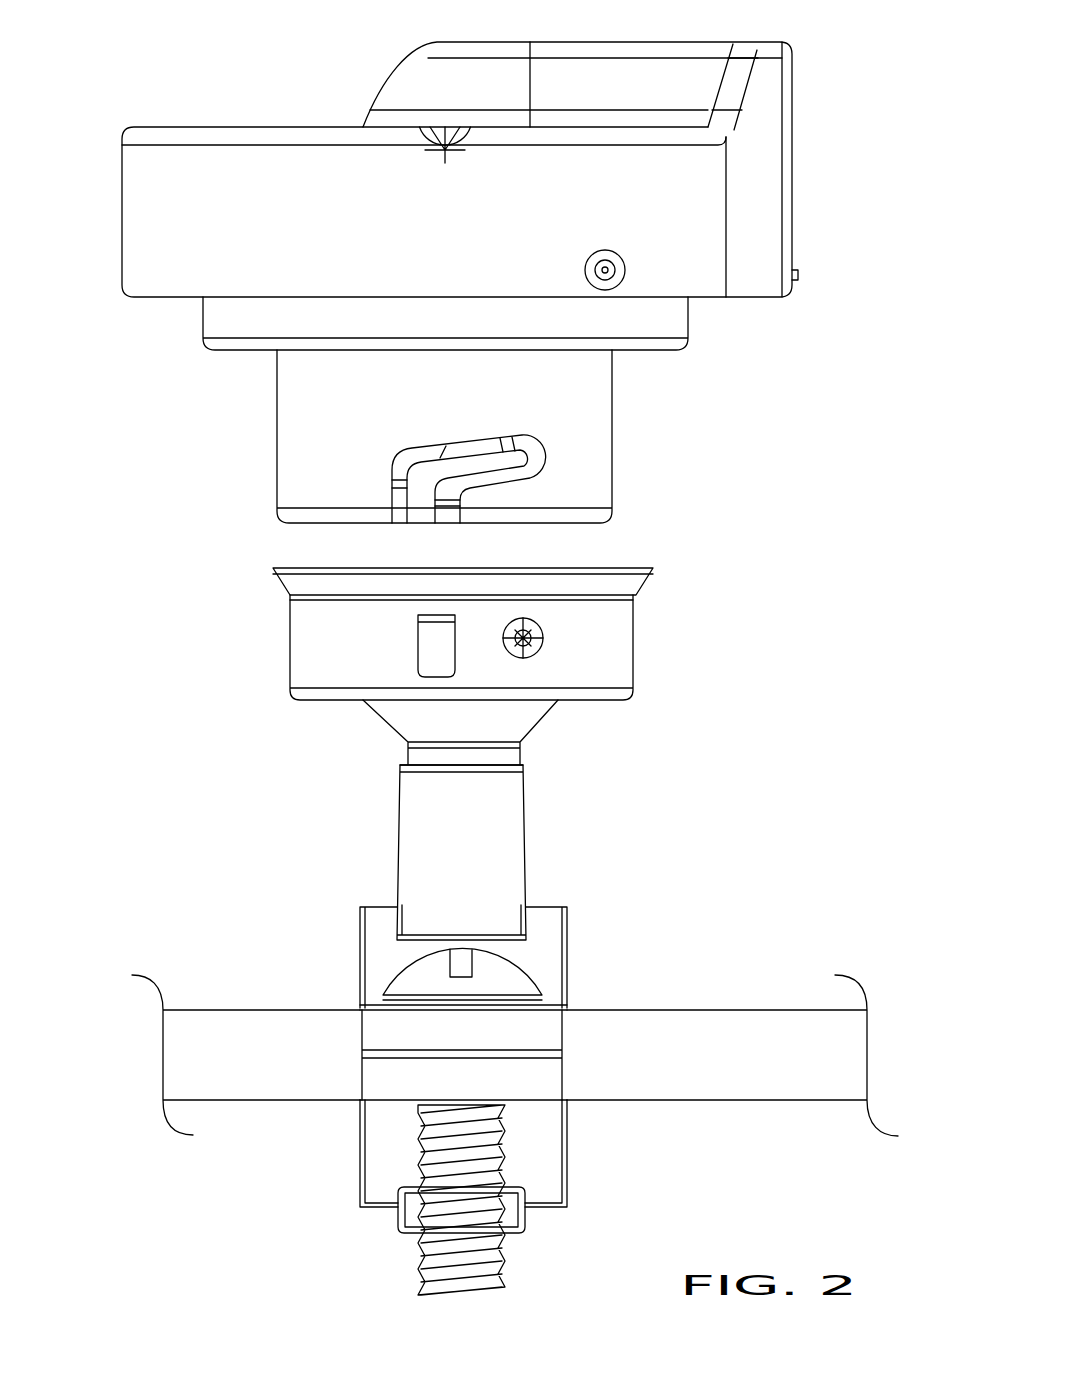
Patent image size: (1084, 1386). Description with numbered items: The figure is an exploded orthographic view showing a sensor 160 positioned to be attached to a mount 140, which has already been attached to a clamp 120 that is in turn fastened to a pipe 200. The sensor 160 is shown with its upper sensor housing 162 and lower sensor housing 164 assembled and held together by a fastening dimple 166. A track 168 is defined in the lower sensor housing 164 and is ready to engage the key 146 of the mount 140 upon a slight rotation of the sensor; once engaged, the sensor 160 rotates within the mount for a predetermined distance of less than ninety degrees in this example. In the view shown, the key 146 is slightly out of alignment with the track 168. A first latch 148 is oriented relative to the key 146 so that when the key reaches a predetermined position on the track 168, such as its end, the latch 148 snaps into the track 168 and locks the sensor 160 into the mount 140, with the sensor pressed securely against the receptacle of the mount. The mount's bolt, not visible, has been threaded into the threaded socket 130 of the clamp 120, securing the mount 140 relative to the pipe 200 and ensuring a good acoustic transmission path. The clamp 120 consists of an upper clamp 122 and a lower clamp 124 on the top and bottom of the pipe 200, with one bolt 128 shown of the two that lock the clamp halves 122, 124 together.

The clamp 120 is at (471, 1062).
The upper clamp 122 is at (358, 975).
The lower clamp 124 is at (358, 1195).
The bolt 128 is at (500, 1273).
The threaded socket 130 is at (403, 800).
The mount 140 is at (745, 639).
The key 146 is at (543, 632).
The first latch 148 is at (418, 650).
The sensor 160 is at (219, 72).
The upper sensor housing 162 is at (162, 298).
The lower sensor housing 164 is at (277, 443).
The fastening dimple 166 is at (626, 262).
The track 168 is at (520, 455).
The pipe 200 is at (705, 1010).